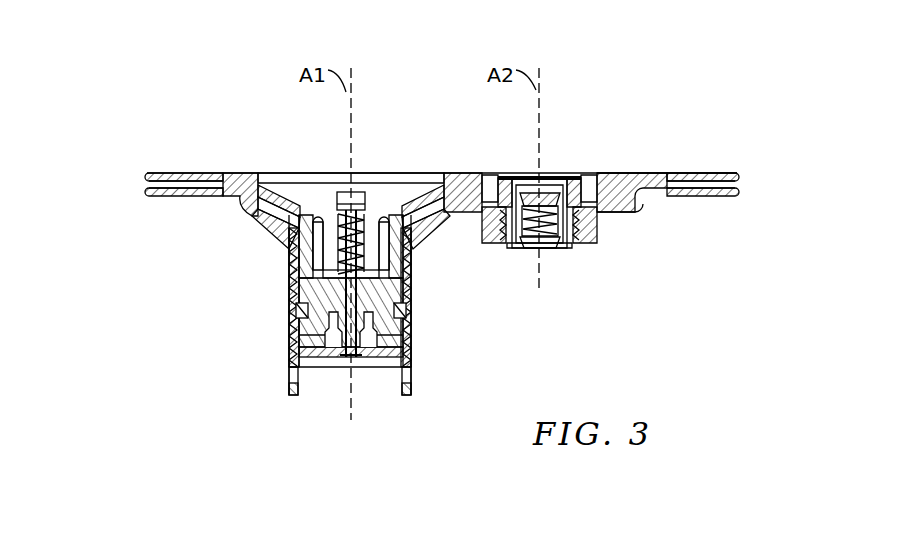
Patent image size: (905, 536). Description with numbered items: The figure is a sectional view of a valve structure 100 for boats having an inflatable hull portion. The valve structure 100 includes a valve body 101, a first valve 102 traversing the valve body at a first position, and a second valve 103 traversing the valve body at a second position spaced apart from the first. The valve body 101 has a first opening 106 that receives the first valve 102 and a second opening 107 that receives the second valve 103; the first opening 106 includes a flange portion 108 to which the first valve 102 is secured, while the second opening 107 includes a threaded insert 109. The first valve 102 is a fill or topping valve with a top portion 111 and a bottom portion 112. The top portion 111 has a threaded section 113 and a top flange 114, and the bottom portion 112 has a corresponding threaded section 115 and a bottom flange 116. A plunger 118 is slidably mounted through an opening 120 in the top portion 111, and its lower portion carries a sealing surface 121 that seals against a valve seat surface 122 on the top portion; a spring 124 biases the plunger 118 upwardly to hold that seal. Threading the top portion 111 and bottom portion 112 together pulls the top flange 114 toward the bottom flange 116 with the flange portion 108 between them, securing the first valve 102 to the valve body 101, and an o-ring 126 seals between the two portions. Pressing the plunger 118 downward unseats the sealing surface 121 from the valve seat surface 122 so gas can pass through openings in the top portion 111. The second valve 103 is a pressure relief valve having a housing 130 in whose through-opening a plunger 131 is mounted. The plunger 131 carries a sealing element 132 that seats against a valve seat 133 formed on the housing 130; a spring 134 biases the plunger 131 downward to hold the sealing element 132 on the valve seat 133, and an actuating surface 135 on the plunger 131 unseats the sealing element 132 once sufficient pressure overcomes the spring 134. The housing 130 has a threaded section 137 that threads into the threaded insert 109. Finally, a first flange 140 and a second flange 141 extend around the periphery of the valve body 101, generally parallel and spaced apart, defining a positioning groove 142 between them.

The valve structure 100 is at (774, 42).
The valve body 101 is at (672, 172).
The first valve 102 is at (260, 297).
The second valve 103 is at (612, 272).
The first opening 106 is at (262, 170).
The second opening 107 is at (600, 172).
The flange portion 108 is at (268, 232).
The threaded insert 109 is at (598, 220).
The top portion 111 is at (386, 186).
The bottom portion 112 is at (290, 360).
The threaded section 113 is at (414, 264).
The top flange 114 is at (292, 184).
The threaded section 115 is at (412, 285).
The bottom flange 116 is at (280, 250).
The plunger 118 is at (346, 190).
The opening 120 is at (340, 319).
The sealing surface 121 is at (360, 359).
The valve seat surface 122 is at (328, 358).
The spring 124 is at (330, 194).
The o-ring 126 is at (412, 309).
The housing 130 is at (486, 178).
The plunger 131 is at (550, 182).
The sealing element 132 is at (536, 182).
The valve seat 133 is at (500, 184).
The spring 134 is at (546, 252).
The actuating surface 135 is at (522, 252).
The threaded section 137 is at (600, 242).
The first flange 140 is at (180, 196).
The second flange 141 is at (174, 172).
The groove 142 is at (138, 189).